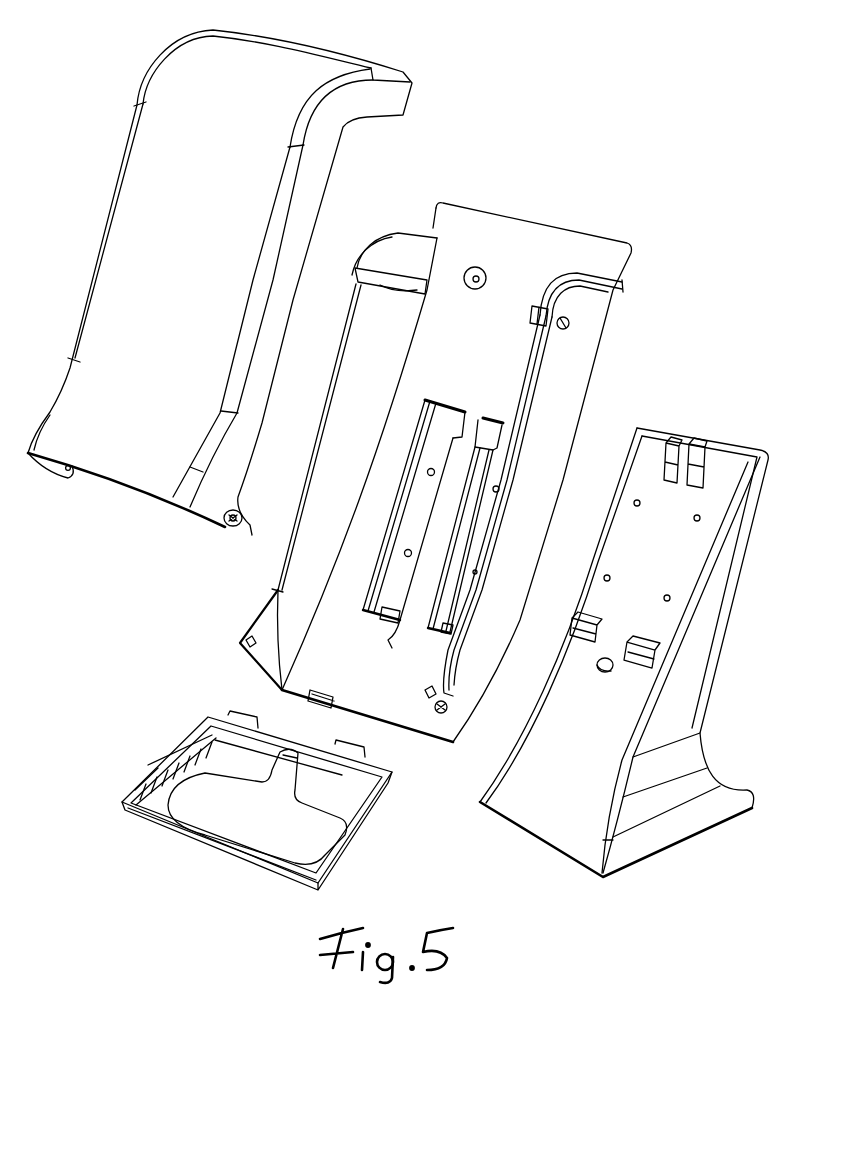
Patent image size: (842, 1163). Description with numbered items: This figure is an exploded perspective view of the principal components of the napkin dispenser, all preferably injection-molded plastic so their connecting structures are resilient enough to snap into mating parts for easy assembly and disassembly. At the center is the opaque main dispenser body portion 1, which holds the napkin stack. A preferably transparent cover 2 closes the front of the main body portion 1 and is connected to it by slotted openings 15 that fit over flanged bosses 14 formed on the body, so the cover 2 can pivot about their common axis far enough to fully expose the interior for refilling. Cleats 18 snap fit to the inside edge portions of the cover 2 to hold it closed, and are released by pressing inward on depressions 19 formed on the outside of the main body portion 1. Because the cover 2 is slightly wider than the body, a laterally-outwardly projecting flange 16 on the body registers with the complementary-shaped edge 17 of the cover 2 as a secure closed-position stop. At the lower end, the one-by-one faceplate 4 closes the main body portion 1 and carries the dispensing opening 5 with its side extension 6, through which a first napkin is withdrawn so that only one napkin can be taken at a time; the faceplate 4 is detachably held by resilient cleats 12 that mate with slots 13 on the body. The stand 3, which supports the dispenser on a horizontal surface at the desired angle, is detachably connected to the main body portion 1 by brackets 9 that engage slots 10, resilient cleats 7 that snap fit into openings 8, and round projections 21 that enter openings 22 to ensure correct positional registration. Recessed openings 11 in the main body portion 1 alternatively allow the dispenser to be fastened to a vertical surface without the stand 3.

The main dispenser body portion 1 is at (547, 449).
The cover 2 is at (206, 174).
The stand 3 is at (586, 759).
The faceplate 4 is at (362, 852).
The dispensing opening 5 is at (268, 829).
The side extension 6 is at (292, 784).
The resilient cleats 7 is at (663, 465).
The openings 8 is at (497, 428).
The brackets 9 is at (640, 668).
The slots 10 is at (420, 641).
The recessed openings 11 is at (488, 277).
The resilient cleats 12 is at (240, 707).
The slots 13 is at (322, 693).
The flanged bosses 14 is at (447, 705).
The slotted openings 15 is at (247, 527).
The laterally-outwardly projecting flange 16 is at (582, 292).
The complementary-shaped edge 17 is at (318, 173).
The cleats 18 is at (530, 313).
The depressions 19 is at (570, 329).
The round projections 21 is at (697, 521).
The openings 22 is at (430, 470).